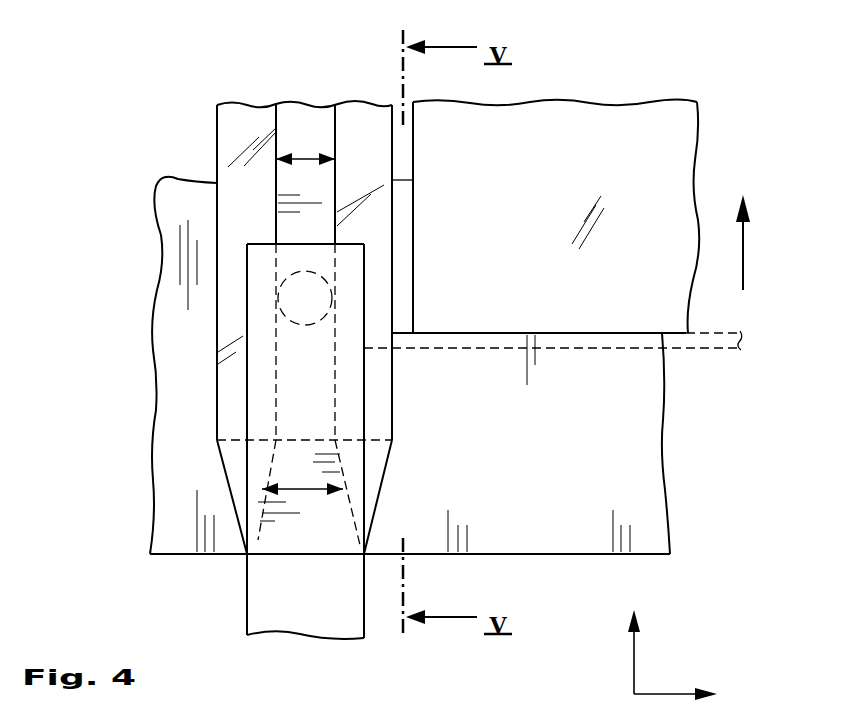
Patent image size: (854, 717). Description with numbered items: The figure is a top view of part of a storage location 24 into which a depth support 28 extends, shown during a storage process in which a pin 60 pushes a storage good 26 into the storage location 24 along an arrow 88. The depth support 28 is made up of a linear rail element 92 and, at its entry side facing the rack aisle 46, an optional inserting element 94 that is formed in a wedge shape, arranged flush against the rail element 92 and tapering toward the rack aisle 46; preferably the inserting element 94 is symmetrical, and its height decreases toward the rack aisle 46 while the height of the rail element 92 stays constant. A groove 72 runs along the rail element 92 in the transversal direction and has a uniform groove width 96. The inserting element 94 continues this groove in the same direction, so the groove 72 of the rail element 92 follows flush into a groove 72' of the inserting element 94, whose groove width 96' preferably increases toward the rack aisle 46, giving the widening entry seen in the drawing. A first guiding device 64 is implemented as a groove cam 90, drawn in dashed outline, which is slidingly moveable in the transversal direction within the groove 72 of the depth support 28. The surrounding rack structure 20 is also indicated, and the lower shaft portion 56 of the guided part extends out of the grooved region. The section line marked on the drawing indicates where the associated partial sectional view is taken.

The body 20 is at (197, 465).
The storage location 24 is at (664, 461).
The storage good 26 is at (531, 224).
The depth support 28 is at (208, 137).
The rack aisle 46 is at (745, 624).
The shaft 56 is at (362, 622).
The pin 60 is at (714, 350).
The first guiding device 64 is at (340, 265).
The groove 72 is at (317, 232).
The groove of the inserting element 72' is at (371, 492).
The arrow 88 is at (746, 245).
The groove cam 90 is at (292, 310).
The rail element 92 is at (248, 207).
The inserting element 94 is at (278, 537).
The groove width 96 is at (367, 148).
The groove width of the inserting element groove 96' is at (302, 517).